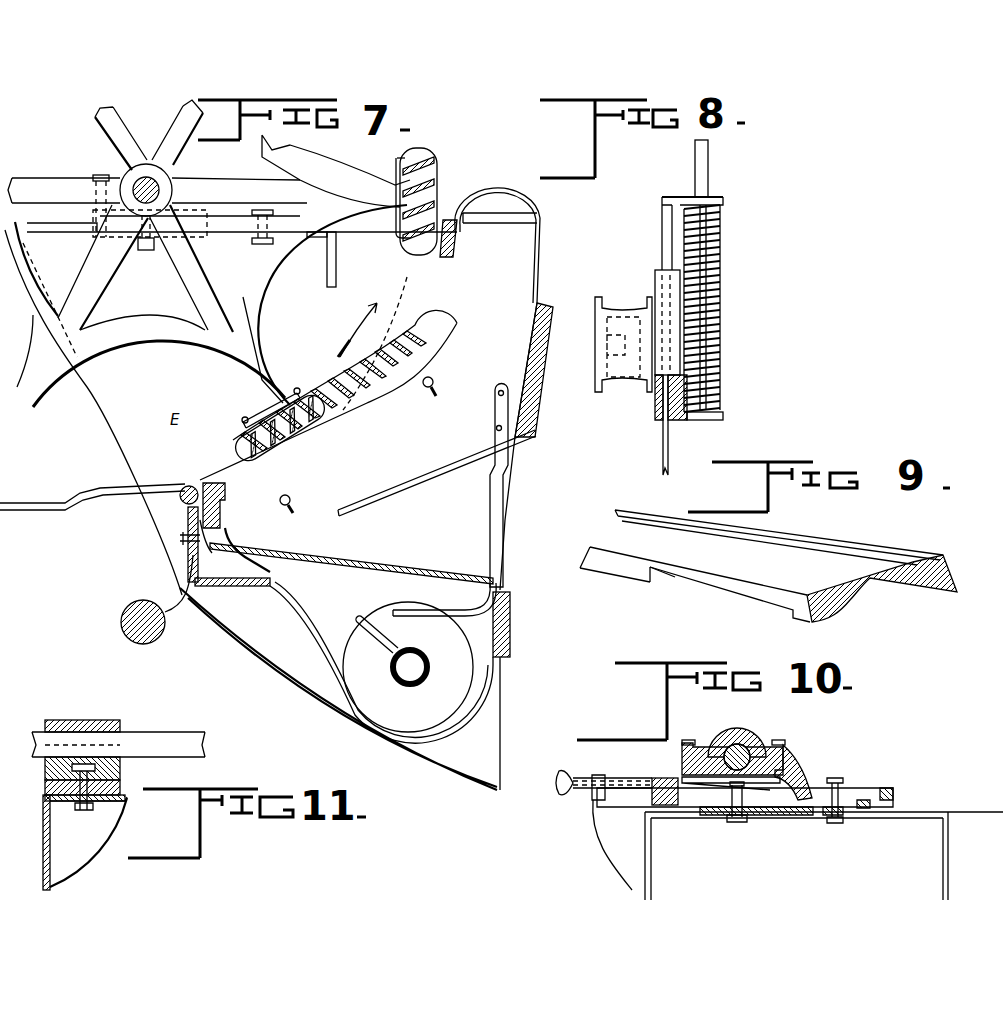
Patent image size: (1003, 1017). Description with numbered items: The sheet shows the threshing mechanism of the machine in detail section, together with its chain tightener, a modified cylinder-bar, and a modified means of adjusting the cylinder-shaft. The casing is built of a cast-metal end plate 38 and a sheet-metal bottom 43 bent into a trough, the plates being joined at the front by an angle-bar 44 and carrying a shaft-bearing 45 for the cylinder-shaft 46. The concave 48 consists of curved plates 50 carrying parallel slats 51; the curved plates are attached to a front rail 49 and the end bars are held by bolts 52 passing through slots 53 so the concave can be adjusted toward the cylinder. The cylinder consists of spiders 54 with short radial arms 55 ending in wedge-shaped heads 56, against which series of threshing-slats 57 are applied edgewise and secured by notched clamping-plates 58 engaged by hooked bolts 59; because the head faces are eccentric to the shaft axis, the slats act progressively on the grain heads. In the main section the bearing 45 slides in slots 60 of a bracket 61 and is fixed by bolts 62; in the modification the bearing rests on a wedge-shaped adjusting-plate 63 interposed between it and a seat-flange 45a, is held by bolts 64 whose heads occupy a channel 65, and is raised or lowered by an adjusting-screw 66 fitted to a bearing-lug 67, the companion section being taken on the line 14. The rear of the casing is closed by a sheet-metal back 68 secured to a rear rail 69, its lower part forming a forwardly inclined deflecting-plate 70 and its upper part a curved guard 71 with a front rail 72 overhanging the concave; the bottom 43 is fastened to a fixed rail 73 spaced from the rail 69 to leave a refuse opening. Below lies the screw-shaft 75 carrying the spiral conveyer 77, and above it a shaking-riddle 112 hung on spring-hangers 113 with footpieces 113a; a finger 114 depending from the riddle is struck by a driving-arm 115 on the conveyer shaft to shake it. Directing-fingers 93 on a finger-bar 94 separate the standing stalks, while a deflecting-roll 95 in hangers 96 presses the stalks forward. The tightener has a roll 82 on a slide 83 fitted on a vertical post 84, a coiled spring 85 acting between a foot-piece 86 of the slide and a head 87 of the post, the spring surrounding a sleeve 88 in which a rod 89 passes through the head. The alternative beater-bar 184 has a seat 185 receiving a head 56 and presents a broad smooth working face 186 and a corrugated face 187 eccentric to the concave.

In FIG. 10, the section line 14 is at (737, 744).
In FIG. 7, the end plate 38 is at (110, 418).
In FIG. 7, the bottom 43 is at (410, 738).
In FIG. 7, the angle-bar 44 is at (224, 586).
In FIG. 7, the shaft-bearing 45 is at (205, 207).
In FIG. 10, the shaft-bearing 45 is at (803, 770).
In FIG. 11, the shaft-bearing 45 is at (65, 719).
In FIG. 10, the seat-flange 45a is at (890, 815).
In FIG. 11, the seat-flange 45a is at (118, 803).
In FIG. 7, the cylinder-shaft 46 is at (146, 176).
In FIG. 10, the cylinder-shaft 46 is at (762, 742).
In FIG. 11, the cylinder-shaft 46 is at (158, 742).
In FIG. 7, the concave 48 is at (372, 343).
In FIG. 7, the front rail 49 is at (212, 482).
In FIG. 7, the curved plates 50 is at (455, 347).
In FIG. 7, the slats 51 is at (412, 333).
In FIG. 7, the bolts 52 is at (435, 383).
In FIG. 7, the slots 53 is at (439, 397).
In FIG. 7, the spiders 54 is at (123, 342).
In FIG. 7, the radial arms 55 is at (362, 188).
In FIG. 7, the wedge-shaped heads 56 is at (402, 240).
In FIG. 7, the threshing-slats 57 is at (432, 163).
In FIG. 7, the clamping-plate 58 is at (440, 188).
In FIG. 7, the hooked bolts 59 is at (300, 388).
In FIG. 7, the slots 60 is at (322, 250).
In FIG. 7, the bracket 61 is at (232, 218).
In FIG. 7, the bolts 62 is at (146, 251).
In FIG. 10, the wedge-shaped adjusting-plate 63 is at (668, 806).
In FIG. 11, the wedge-shaped adjusting-plate 63 is at (45, 790).
In FIG. 10, the bolts 64 is at (748, 815).
In FIG. 11, the bolts 64 is at (80, 811).
In FIG. 10, the channel 65 is at (688, 780).
In FIG. 11, the channel 65 is at (121, 770).
In FIG. 10, the adjusting-screw 66 is at (619, 777).
In FIG. 10, the bearing-lug 67 is at (596, 792).
In FIG. 7, the sheet-metal back 68 is at (541, 272).
In FIG. 7, the rear rail 69 is at (552, 392).
In FIG. 7, the deflecting-plate 70 is at (440, 470).
In FIG. 7, the curved guard 71 is at (505, 187).
In FIG. 7, the front rail 72 is at (447, 258).
In FIG. 7, the fixed rail 73 is at (512, 623).
In FIG. 7, the screw-shaft 75 is at (414, 685).
In FIG. 7, the spiral conveyer 77 is at (408, 667).
In FIG. 8, the roll 82 is at (620, 310).
In FIG. 8, the slide 83 is at (657, 405).
In FIG. 8, the vertical post 84 is at (663, 455).
In FIG. 8, the coiled spring 85 is at (722, 320).
In FIG. 8, the foot-piece 86 is at (724, 417).
In FIG. 8, the head 87 is at (723, 197).
In FIG. 8, the sleeve 88 is at (712, 362).
In FIG. 8, the rod 89 is at (708, 165).
In FIG. 7, the directing-fingers 93 is at (30, 512).
In FIG. 7, the finger-bar 94 is at (180, 503).
In FIG. 7, the deflecting-roll 95 is at (122, 626).
In FIG. 7, the hangers 96 is at (180, 610).
In FIG. 7, the shaking-riddle 112 is at (346, 631).
In FIG. 7, the spring-hangers 113 is at (505, 505).
In FIG. 7, the footpieces 113a is at (408, 549).
In FIG. 7, the finger 114 is at (443, 610).
In FIG. 7, the driving-arm 115 is at (360, 618).
In FIG. 9, the beater-bar 184 is at (695, 584).
In FIG. 9, the seat 185 is at (676, 578).
In FIG. 9, the smooth working face 186 is at (875, 590).
In FIG. 9, the corrugated face 187 is at (882, 550).